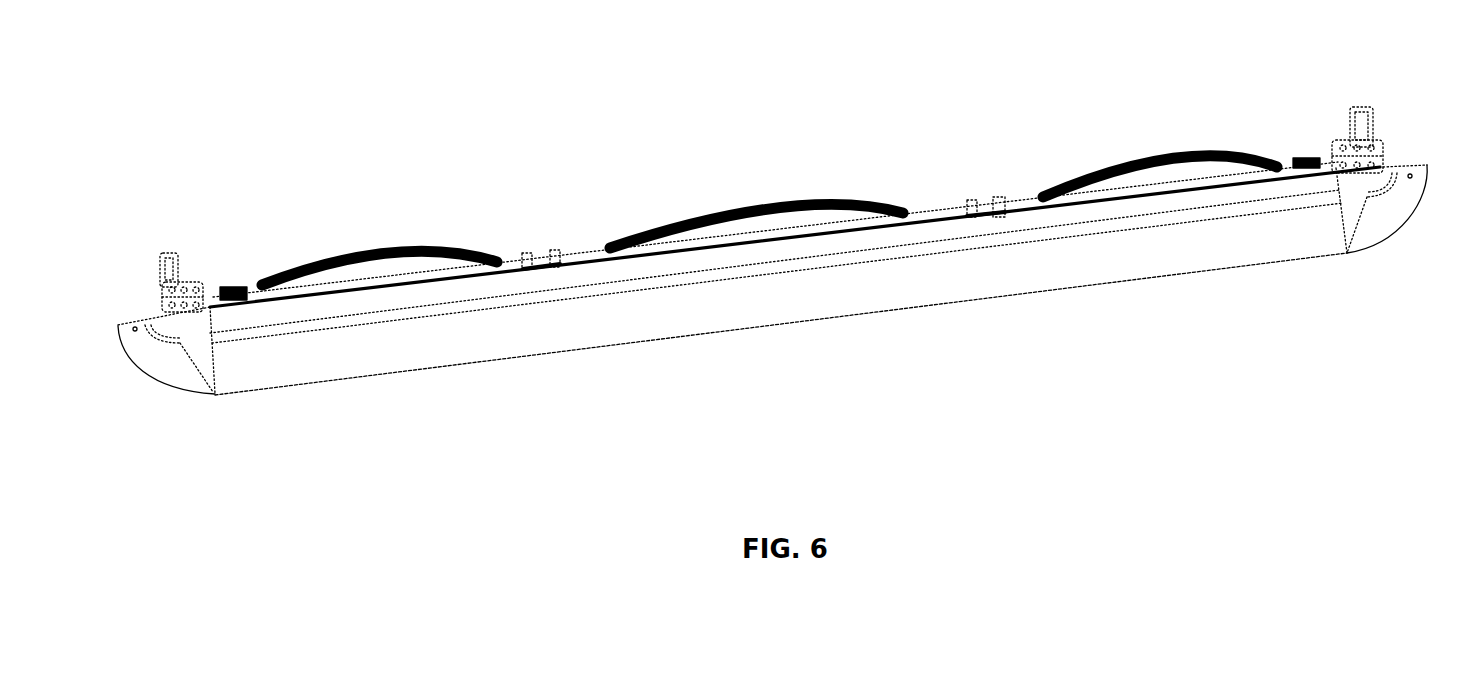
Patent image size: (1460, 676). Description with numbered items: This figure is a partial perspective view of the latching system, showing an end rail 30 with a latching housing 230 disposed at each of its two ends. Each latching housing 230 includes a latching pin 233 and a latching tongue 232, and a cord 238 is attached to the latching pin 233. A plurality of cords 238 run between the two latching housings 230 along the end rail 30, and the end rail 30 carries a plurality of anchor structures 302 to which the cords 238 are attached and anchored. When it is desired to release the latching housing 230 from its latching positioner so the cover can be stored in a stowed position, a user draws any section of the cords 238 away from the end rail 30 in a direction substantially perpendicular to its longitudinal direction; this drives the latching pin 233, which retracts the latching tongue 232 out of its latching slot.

The end rail 30 is at (560, 333).
The latching housing 230 is at (172, 365).
The latching tongue 232 is at (158, 300).
The latching pin 233 is at (205, 297).
The cord 238 is at (368, 247).
The anchor structure 302 is at (528, 265).